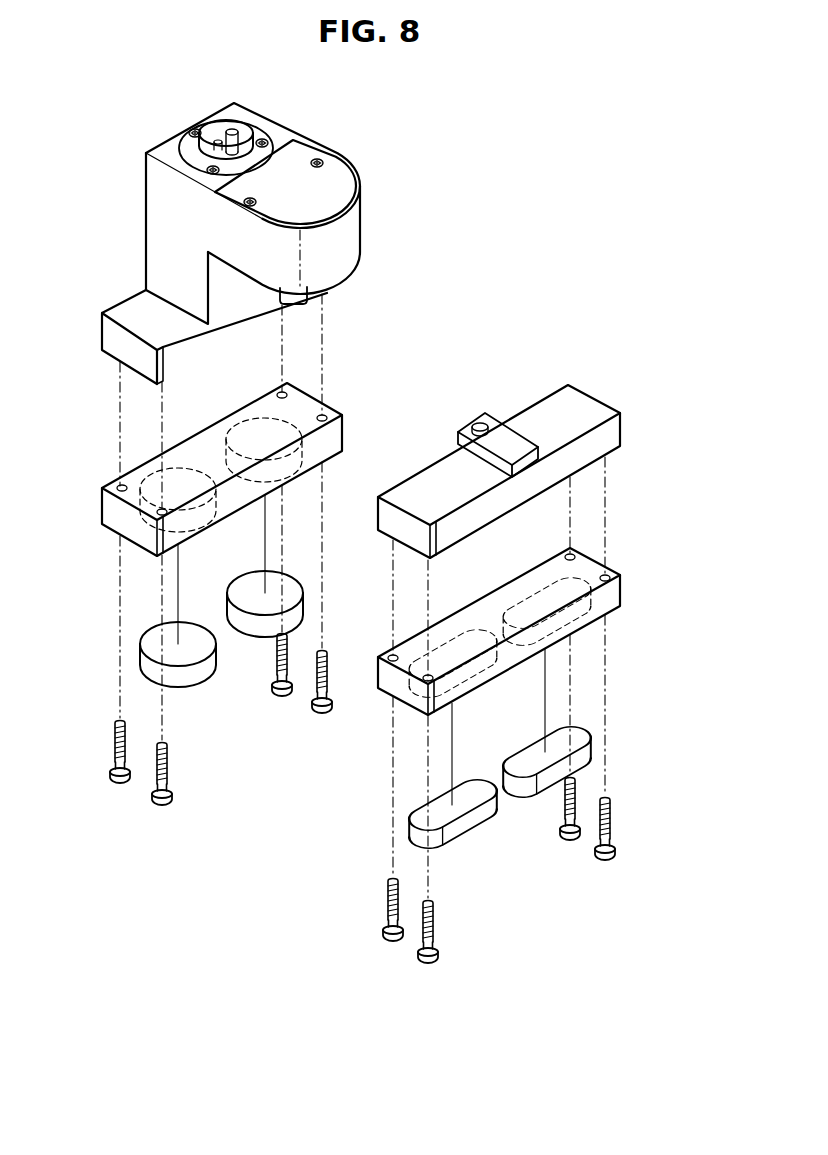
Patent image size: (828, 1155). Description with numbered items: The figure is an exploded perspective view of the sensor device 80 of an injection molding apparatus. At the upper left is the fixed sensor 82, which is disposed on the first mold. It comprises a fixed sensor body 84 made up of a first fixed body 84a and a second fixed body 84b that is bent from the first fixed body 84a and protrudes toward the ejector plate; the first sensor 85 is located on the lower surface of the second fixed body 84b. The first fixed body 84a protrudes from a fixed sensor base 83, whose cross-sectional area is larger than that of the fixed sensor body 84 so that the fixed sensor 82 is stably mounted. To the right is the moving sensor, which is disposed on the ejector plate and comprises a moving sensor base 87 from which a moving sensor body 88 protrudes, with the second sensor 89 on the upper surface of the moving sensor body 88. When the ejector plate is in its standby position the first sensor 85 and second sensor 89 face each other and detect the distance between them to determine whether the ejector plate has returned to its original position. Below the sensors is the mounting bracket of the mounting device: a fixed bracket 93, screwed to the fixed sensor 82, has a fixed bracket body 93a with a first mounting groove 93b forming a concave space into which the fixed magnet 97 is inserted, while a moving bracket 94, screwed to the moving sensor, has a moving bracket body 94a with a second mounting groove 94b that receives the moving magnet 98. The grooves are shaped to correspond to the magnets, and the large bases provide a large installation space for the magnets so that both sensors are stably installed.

The sensor device 80 is at (494, 131).
The fixed sensor 82 is at (367, 207).
The fixed sensor base 83 is at (128, 312).
The fixed sensor body 84 is at (80, 181).
The first fixed body 84a is at (173, 253).
The second fixed body 84b is at (243, 231).
The first sensor 85 is at (305, 293).
The moving sensor base 87 is at (596, 404).
The moving sensor body 88 is at (508, 441).
The second sensor 89 is at (479, 421).
The fixed bracket 93 is at (336, 416).
The fixed bracket body 93a is at (330, 445).
The first mounting groove 93b is at (290, 475).
The moving bracket 94 is at (620, 573).
The moving bracket body 94a is at (610, 603).
The second mounting groove 94b is at (572, 617).
The fixed magnet 97 is at (253, 628).
The moving magnet 98 is at (533, 792).